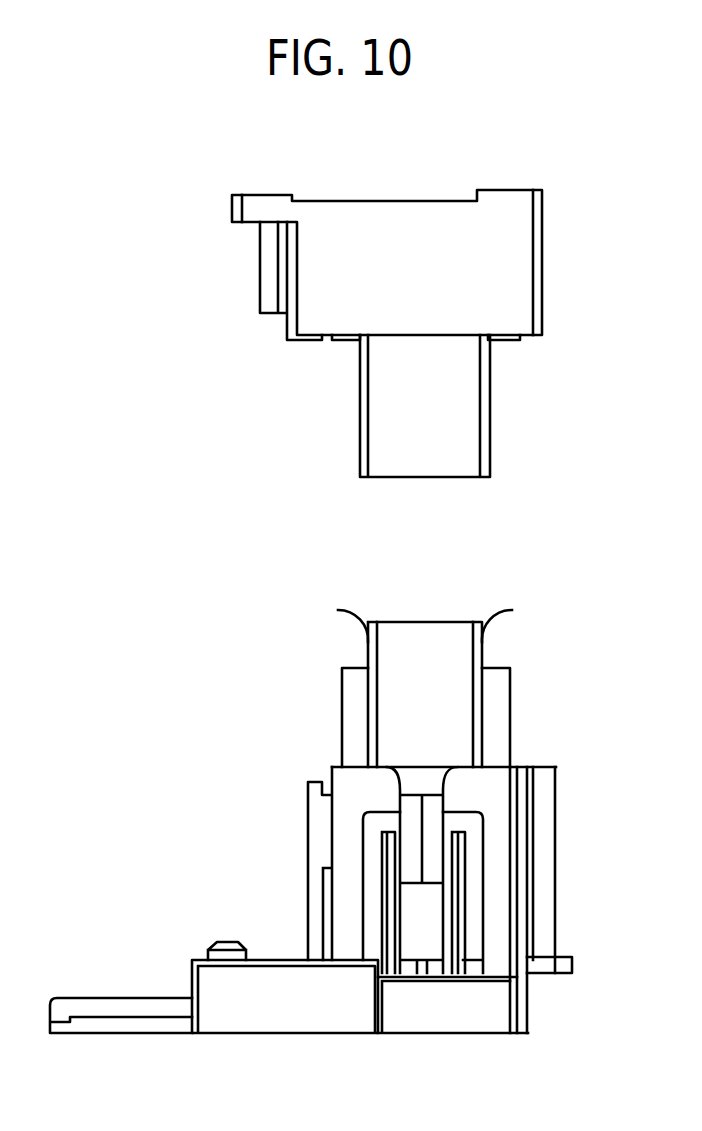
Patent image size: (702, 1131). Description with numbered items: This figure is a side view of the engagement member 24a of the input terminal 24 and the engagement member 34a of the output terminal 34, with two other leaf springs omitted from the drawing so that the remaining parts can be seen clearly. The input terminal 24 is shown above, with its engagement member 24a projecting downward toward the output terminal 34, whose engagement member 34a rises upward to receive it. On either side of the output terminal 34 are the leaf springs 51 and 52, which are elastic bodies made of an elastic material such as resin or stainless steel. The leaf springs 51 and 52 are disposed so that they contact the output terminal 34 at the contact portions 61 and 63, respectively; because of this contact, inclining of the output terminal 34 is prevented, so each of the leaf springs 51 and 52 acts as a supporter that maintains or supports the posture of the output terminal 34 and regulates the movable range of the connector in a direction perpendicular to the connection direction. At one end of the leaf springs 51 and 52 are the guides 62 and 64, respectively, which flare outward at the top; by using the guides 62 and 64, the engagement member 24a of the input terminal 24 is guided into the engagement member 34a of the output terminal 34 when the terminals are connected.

The input terminal 24 is at (409, 333).
The engagement member of the input terminal 24a is at (455, 442).
The output terminal 34 is at (435, 782).
The engagement member of the output terminal 34a is at (453, 730).
The leaf spring 51 is at (514, 692).
The leaf spring 52 is at (337, 693).
The contact portion 61 is at (488, 648).
The guide 62 is at (507, 615).
The contact portion 63 is at (362, 650).
The guide 64 is at (348, 617).